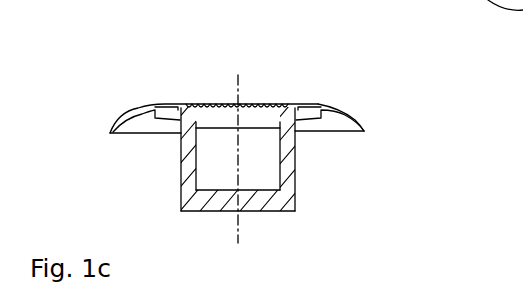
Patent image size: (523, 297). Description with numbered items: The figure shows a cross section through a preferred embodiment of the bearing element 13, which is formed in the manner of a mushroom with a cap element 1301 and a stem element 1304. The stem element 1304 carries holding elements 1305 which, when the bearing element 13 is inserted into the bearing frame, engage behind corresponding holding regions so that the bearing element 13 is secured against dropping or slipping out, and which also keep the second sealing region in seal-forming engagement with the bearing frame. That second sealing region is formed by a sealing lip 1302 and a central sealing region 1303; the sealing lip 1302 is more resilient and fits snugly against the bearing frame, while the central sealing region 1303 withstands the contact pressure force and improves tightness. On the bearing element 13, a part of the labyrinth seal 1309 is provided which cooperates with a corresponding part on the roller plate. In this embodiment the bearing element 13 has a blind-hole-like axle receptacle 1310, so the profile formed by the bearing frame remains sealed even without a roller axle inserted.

The bearing element 13 is at (127, 80).
The cap element 1301 is at (343, 110).
The sealing lip 1302 is at (363, 133).
The central sealing region 1303 is at (305, 130).
The stem element 1304 is at (182, 188).
The holding elements 1305 is at (181, 170).
The labyrinth seal part 1309 is at (306, 98).
The blind-hole-like axle receptacle 1310 is at (238, 80).